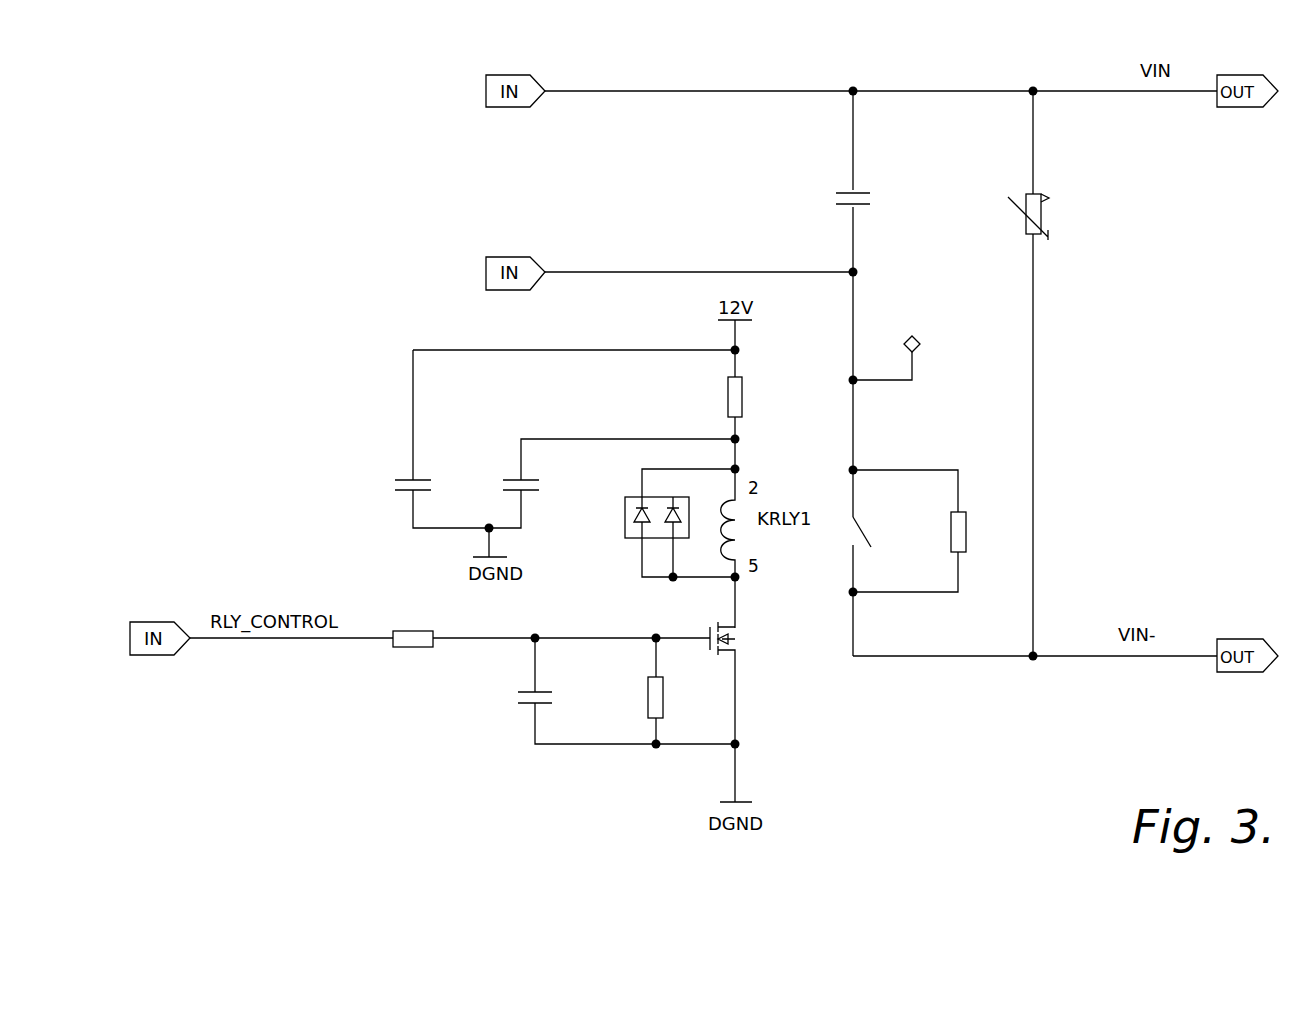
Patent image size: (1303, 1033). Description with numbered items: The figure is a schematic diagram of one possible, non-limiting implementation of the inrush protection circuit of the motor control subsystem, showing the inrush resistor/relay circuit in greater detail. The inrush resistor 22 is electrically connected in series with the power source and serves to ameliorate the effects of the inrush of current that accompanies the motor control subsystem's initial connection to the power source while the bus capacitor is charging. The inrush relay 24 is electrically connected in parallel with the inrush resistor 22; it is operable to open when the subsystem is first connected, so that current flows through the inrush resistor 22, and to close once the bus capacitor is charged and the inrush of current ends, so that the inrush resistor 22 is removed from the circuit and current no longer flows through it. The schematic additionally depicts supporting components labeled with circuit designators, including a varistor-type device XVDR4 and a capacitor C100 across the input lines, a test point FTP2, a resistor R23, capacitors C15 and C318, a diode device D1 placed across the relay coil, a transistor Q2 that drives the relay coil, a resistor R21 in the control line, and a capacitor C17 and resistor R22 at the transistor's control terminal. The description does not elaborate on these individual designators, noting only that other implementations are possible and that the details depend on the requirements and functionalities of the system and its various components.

The inrush resistor 22 is at (968, 500).
The inrush relay 24 is at (838, 548).
The varistor XVDR4 is at (1064, 215).
The capacitor C100 is at (881, 192).
The test point FTP2 is at (910, 357).
The resistor R23 is at (755, 397).
The capacitor C15 is at (433, 474).
The capacitor C318 is at (548, 474).
The dual diode D1 is at (640, 519).
The MOSFET transistor Q2 is at (745, 683).
The resistor R21 is at (413, 626).
The capacitor C17 is at (559, 692).
The resistor R22 is at (680, 697).